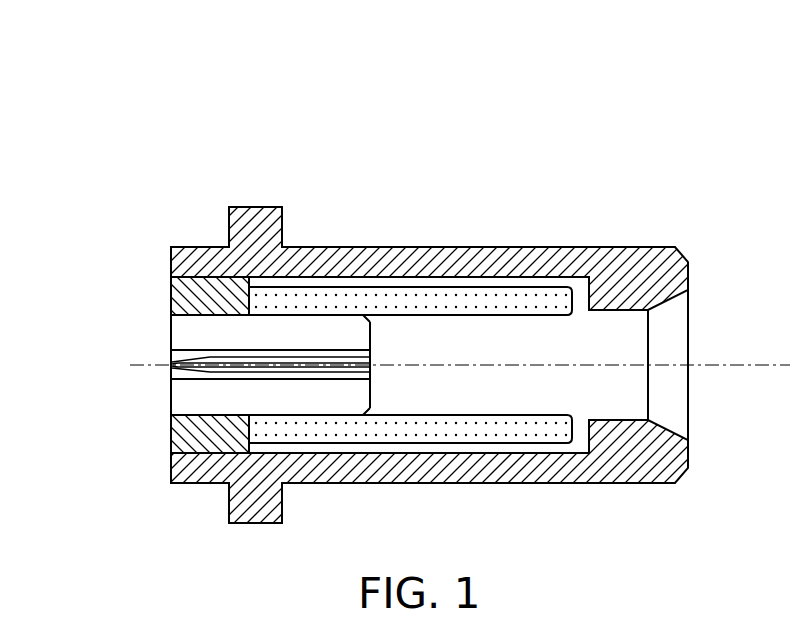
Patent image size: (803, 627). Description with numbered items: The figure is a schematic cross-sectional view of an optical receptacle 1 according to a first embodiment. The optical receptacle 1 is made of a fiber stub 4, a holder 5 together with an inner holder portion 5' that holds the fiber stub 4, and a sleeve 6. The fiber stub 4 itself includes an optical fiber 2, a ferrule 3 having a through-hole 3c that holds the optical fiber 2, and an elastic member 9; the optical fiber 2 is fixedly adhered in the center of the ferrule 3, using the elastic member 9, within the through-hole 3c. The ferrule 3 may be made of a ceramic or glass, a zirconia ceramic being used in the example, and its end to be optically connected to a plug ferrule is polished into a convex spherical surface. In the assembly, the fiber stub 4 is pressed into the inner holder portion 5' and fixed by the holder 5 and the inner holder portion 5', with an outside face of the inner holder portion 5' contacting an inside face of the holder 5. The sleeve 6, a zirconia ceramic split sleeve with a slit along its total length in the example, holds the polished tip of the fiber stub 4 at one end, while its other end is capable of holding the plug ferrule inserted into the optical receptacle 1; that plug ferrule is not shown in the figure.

The optical receptacle 1 is at (172, 80).
The optical fiber 2 is at (298, 375).
The ferrule 3 is at (225, 335).
The through-hole 3c is at (370, 350).
The fiber stub 4 is at (315, 135).
The holder 5 is at (429, 344).
The inner holder portion 5' is at (198, 423).
The sleeve 6 is at (542, 298).
The elastic member 9 is at (177, 378).